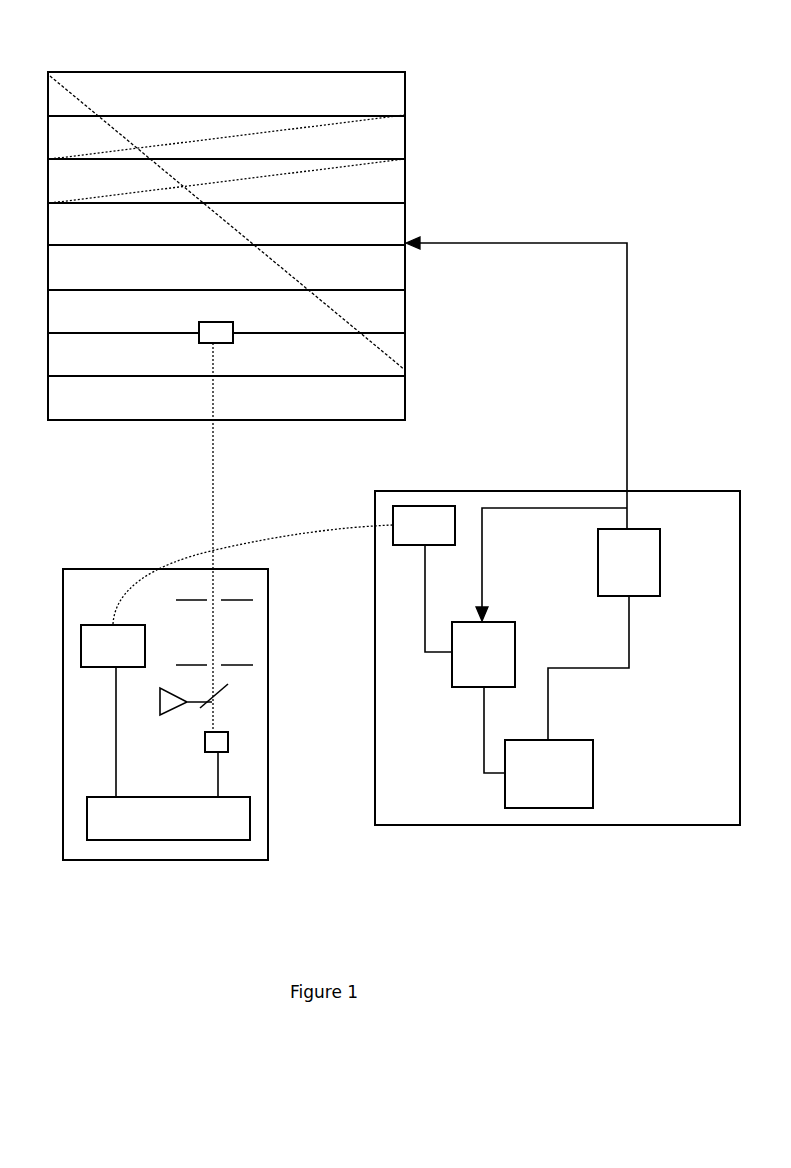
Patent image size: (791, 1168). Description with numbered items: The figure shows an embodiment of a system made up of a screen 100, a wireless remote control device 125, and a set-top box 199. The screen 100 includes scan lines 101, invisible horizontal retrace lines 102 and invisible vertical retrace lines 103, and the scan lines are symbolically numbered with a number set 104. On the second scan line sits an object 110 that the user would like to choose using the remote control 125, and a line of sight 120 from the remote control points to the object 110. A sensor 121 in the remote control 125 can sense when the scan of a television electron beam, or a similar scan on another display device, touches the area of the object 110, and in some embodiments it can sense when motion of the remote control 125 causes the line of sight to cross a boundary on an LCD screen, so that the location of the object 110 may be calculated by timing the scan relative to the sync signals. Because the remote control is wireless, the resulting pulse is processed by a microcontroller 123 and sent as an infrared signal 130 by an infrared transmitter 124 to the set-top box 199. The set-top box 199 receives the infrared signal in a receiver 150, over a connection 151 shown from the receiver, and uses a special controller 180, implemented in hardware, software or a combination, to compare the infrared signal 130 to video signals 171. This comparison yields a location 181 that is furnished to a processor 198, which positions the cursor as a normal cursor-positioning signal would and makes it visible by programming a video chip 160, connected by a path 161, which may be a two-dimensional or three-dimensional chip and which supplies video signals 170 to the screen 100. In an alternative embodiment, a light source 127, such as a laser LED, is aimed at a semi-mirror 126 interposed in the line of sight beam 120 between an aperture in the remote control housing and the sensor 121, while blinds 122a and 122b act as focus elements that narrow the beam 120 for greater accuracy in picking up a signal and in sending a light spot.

The screen 100 is at (327, 70).
The scan lines 101 is at (190, 115).
The invisible horizontal retrace lines 102 is at (364, 122).
The invisible vertical retrace lines 103 is at (82, 100).
The number set 104 is at (32, 100).
The object 110 is at (226, 344).
The line of sight 120 is at (210, 447).
The sensor 121 is at (230, 743).
The blind 122a is at (255, 600).
The blind 122b is at (255, 665).
The microcontroller 123 is at (168, 818).
The infrared transmitter 124 is at (113, 711).
The wireless remote control device 125 is at (108, 863).
The semi-mirror 126 is at (226, 692).
The light source 127 is at (158, 703).
The infrared signal 130 is at (286, 533).
The receiver 150 is at (424, 525).
The controller connection 151 is at (423, 620).
The video chip 160 is at (629, 562).
The driver connection 161 is at (630, 630).
The video signals 170 is at (498, 246).
The video signal(s) 171 is at (535, 505).
The special controller 180 is at (483, 654).
The location 181 is at (482, 720).
The processor 198 is at (549, 774).
The set-top box 199 is at (557, 658).